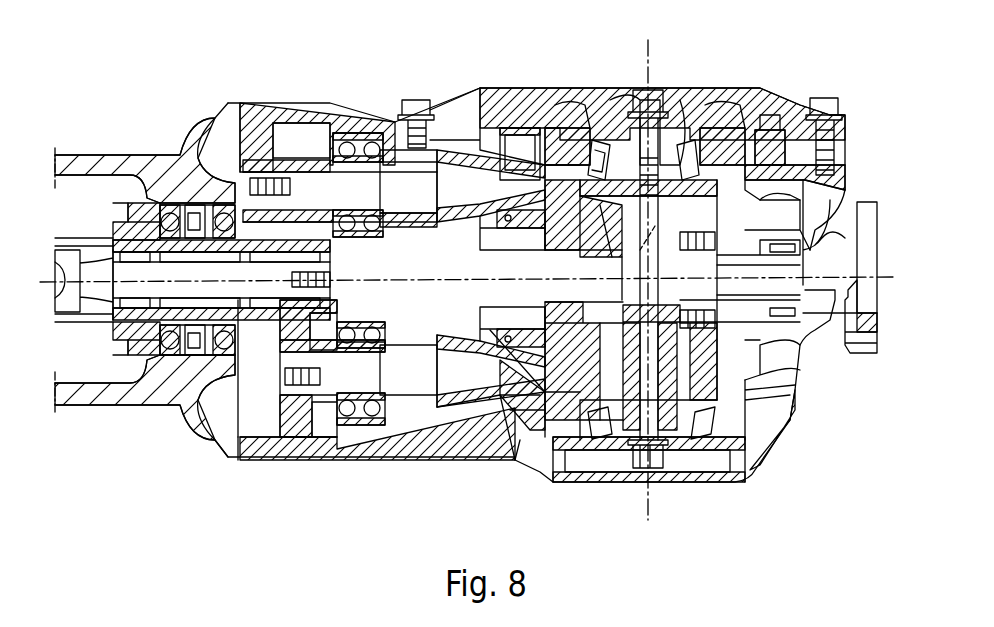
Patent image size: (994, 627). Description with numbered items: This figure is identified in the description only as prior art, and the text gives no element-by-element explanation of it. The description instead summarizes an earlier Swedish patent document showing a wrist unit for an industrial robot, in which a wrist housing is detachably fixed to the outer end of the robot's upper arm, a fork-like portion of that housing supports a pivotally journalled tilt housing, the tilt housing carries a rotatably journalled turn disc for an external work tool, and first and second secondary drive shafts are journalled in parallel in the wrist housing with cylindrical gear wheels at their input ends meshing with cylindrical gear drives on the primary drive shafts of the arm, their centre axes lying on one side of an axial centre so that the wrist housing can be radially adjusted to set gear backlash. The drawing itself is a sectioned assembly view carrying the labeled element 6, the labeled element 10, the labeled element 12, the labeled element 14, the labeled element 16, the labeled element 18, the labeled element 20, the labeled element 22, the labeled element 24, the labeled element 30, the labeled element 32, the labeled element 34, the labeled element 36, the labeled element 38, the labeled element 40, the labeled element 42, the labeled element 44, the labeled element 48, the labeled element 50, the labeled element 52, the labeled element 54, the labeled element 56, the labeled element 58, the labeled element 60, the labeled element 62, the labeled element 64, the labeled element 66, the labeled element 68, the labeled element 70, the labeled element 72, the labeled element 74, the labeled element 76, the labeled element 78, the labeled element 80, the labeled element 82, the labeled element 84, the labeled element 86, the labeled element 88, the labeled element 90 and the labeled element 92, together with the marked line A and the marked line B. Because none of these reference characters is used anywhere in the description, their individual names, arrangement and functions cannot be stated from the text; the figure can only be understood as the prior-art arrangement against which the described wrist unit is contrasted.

The drive shaft 6 is at (65, 292).
The differential gear assembly 10 is at (405, 88).
The housing body 12 is at (262, 103).
The lower housing portion 14 is at (785, 425).
The housing end wall 16 is at (842, 165).
The output flange 18 is at (850, 316).
The housing lip 20 is at (840, 215).
The quill shaft 22 is at (482, 247).
The housing extension 24 is at (100, 160).
The seal 30 is at (830, 192).
The output member 32 is at (870, 225).
The output shaft 34 is at (754, 278).
The quill inner wall 36 is at (450, 335).
The bearing 38 is at (380, 320).
The spacer 40 is at (288, 380).
The retaining plate 42 is at (292, 437).
The hub 44 is at (292, 280).
The housing wall 48 is at (495, 395).
The housing wall 50 is at (522, 375).
The nut 52 is at (668, 470).
The bevel gear 54 is at (622, 255).
The sleeve 56 is at (400, 205).
The ball bearing 58 is at (355, 135).
The spline 60 is at (235, 160).
The cavity 62 is at (285, 128).
The ball bearing 64 is at (262, 330).
The seal 66 is at (110, 236).
The upper housing 68 is at (487, 140).
The bearing 70 is at (518, 150).
The bearing cap 72 is at (560, 125).
The tapered roller bearing 74 is at (600, 135).
The bolt 76 is at (418, 100).
The pinion bolt 78 is at (660, 90).
The ring gear carrier 80 is at (695, 196).
The pinion housing 82 is at (632, 130).
The bearing cap 84 is at (770, 128).
The lower cover 86 is at (558, 470).
The tapered roller bearing 88 is at (700, 450).
The cover plate 90 is at (798, 340).
The gasket 92 is at (795, 380).
The axis A is at (659, 214).
The axis B is at (818, 288).